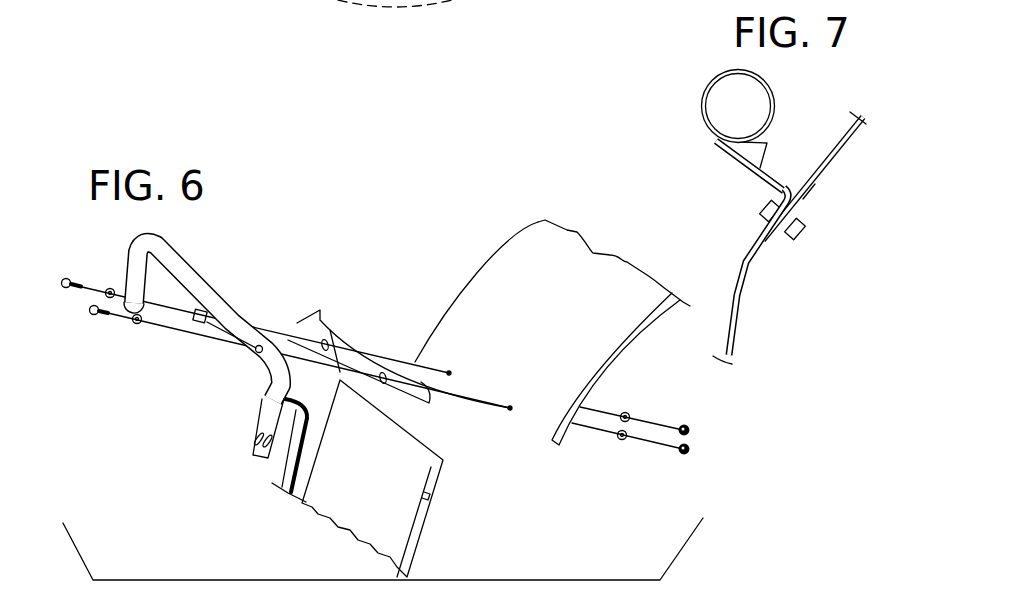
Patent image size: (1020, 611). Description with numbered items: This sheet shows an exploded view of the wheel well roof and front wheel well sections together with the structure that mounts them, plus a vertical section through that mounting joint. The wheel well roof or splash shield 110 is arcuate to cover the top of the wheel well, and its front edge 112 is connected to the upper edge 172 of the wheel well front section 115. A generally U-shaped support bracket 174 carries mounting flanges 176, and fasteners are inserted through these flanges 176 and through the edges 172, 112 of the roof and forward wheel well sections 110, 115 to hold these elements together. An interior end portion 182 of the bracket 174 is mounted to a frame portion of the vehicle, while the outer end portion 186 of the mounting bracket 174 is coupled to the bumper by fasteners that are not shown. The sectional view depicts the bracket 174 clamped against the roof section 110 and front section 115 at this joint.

In FIG. 6, the wheel well roof or splash shield 110 is at (511, 319).
In FIG. 7, the wheel well roof or splash shield 110 is at (841, 150).
In FIG. 6, the front edge of splash shield 112 is at (505, 412).
In FIG. 7, the front edge of splash shield 112 is at (761, 257).
In FIG. 6, the wheel well front section 115 is at (347, 488).
In FIG. 7, the wheel well front section 115 is at (743, 320).
In FIG. 6, the upper edge of wheel well front section 172 is at (350, 352).
In FIG. 6, the support bracket 174 is at (190, 278).
In FIG. 7, the support bracket 174 is at (705, 88).
In FIG. 6, the mounting flanges 176 is at (258, 349).
In FIG. 7, the mounting flanges 176 is at (773, 173).
In FIG. 6, the interior end portion of bracket 182 is at (130, 303).
In FIG. 6, the outer end portion of mounting bracket 186 is at (257, 447).